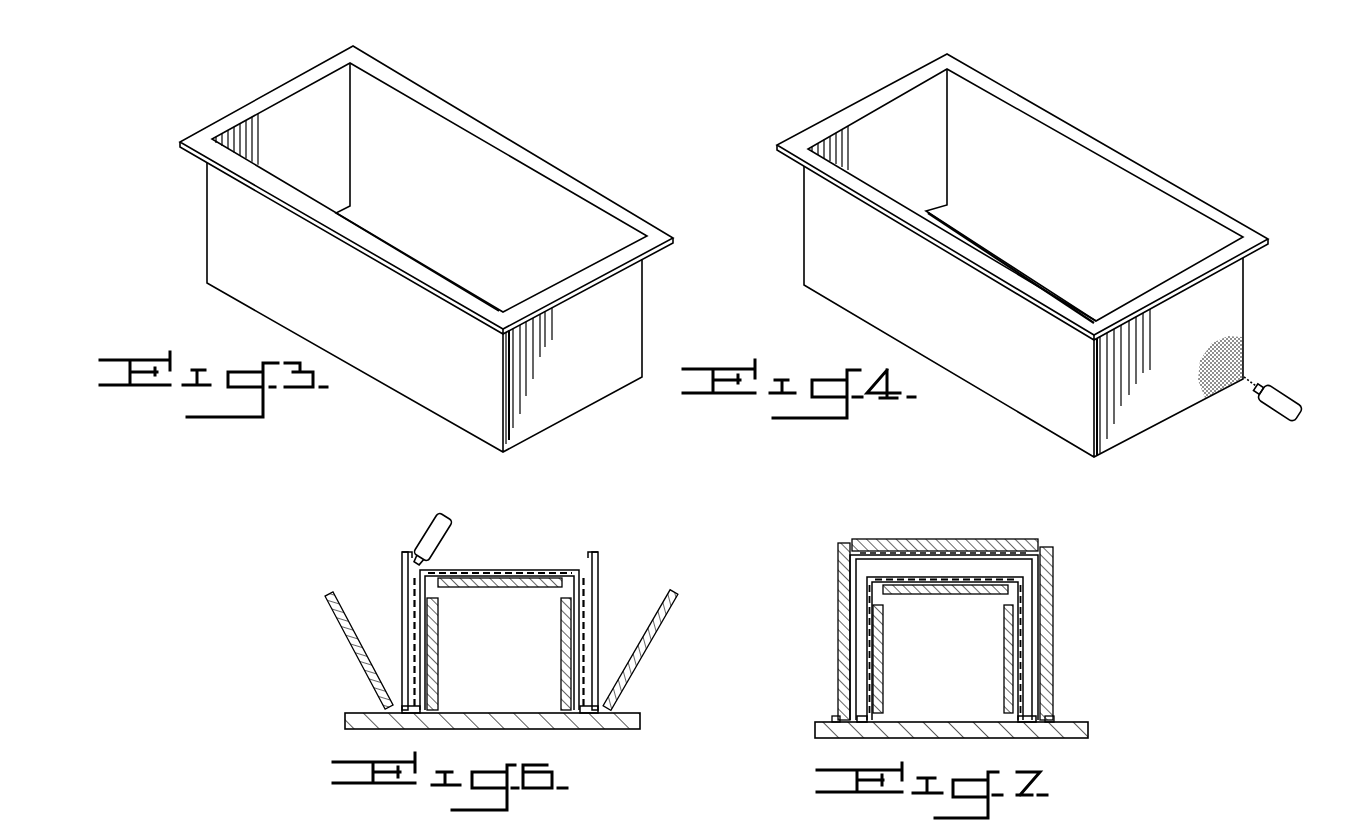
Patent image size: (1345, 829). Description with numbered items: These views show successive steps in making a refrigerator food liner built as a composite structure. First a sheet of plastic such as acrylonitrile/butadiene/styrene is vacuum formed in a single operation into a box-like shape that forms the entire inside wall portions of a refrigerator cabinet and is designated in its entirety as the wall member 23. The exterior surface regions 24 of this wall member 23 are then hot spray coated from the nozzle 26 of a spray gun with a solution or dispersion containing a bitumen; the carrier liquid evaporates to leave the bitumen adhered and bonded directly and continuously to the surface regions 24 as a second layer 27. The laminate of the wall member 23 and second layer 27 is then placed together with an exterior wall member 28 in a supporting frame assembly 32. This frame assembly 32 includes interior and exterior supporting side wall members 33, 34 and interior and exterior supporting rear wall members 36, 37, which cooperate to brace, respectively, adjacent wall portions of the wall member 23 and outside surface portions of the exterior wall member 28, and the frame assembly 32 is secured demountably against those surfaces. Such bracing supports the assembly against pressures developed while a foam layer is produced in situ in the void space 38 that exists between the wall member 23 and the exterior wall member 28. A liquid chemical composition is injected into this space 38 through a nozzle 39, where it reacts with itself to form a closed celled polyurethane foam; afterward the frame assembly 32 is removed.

In FIG. 3, the wall member 23 is at (471, 184).
In FIG. 4, the wall member 23 is at (1079, 199).
In FIG. 6, the wall member 23 is at (432, 590).
In FIG. 7, the wall member 23 is at (870, 593).
In FIG. 3, the exterior surface regions 24 is at (628, 303).
In FIG. 4, the exterior surface regions 24 is at (822, 234).
In FIG. 4, the nozzle 26 is at (1295, 403).
In FIG. 4, the second layer 27 is at (1241, 357).
In FIG. 6, the exterior wall member 28 is at (607, 576).
In FIG. 7, the exterior wall member 28 is at (1053, 579).
In FIG. 6, the supporting frame assembly 32 is at (557, 731).
In FIG. 7, the supporting frame assembly 32 is at (848, 736).
In FIG. 6, the interior supporting side wall members 33 is at (440, 657).
In FIG. 7, the interior supporting side wall members 33 is at (884, 653).
In FIG. 6, the exterior supporting side wall members 34 is at (353, 653).
In FIG. 7, the exterior supporting side wall members 34 is at (837, 657).
In FIG. 6, the interior supporting rear wall member 36 is at (525, 588).
In FIG. 7, the interior supporting rear wall member 36 is at (958, 593).
In FIG. 7, the exterior supporting rear wall member 37 is at (938, 538).
In FIG. 6, the void space 38 is at (587, 571).
In FIG. 6, the nozzle 39 is at (433, 515).